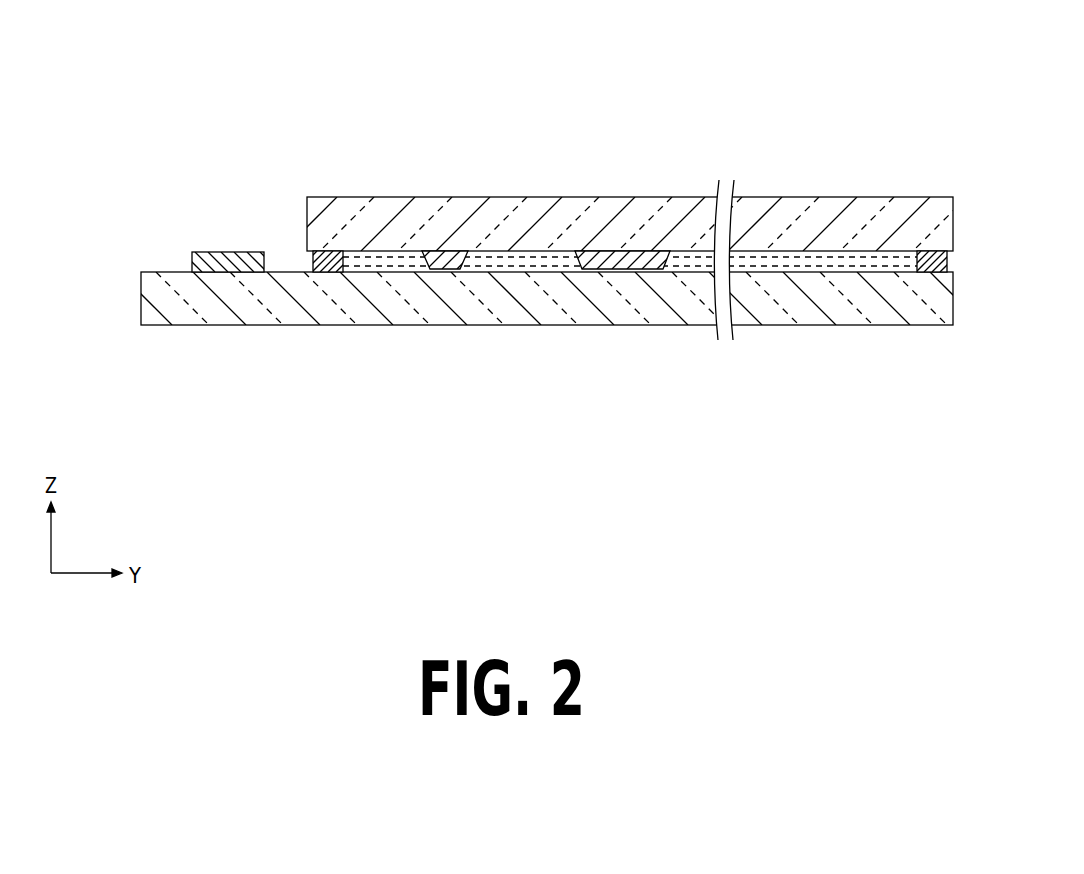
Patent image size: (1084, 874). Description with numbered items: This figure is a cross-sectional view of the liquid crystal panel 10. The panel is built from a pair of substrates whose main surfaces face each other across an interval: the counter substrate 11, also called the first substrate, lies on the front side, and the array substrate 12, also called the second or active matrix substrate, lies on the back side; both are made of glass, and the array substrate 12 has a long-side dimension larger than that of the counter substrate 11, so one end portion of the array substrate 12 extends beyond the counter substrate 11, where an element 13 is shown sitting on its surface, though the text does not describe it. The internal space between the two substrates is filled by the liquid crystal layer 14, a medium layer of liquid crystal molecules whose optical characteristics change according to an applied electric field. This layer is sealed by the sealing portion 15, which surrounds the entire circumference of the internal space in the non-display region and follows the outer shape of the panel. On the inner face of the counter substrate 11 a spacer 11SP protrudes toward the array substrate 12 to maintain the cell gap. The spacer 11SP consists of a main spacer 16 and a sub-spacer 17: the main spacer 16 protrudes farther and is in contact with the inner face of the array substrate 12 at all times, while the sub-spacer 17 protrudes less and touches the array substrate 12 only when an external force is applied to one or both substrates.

The liquid crystal panel 10 is at (252, 53).
The counter substrate 11 is at (808, 218).
The spacer 11SP is at (543, 180).
The array substrate 12 is at (812, 317).
The terminal pad 13 is at (230, 257).
The liquid crystal layer 14 is at (548, 262).
The sealing portion 15 is at (325, 252).
The main spacer 16 is at (445, 256).
The sub-spacer 17 is at (621, 205).